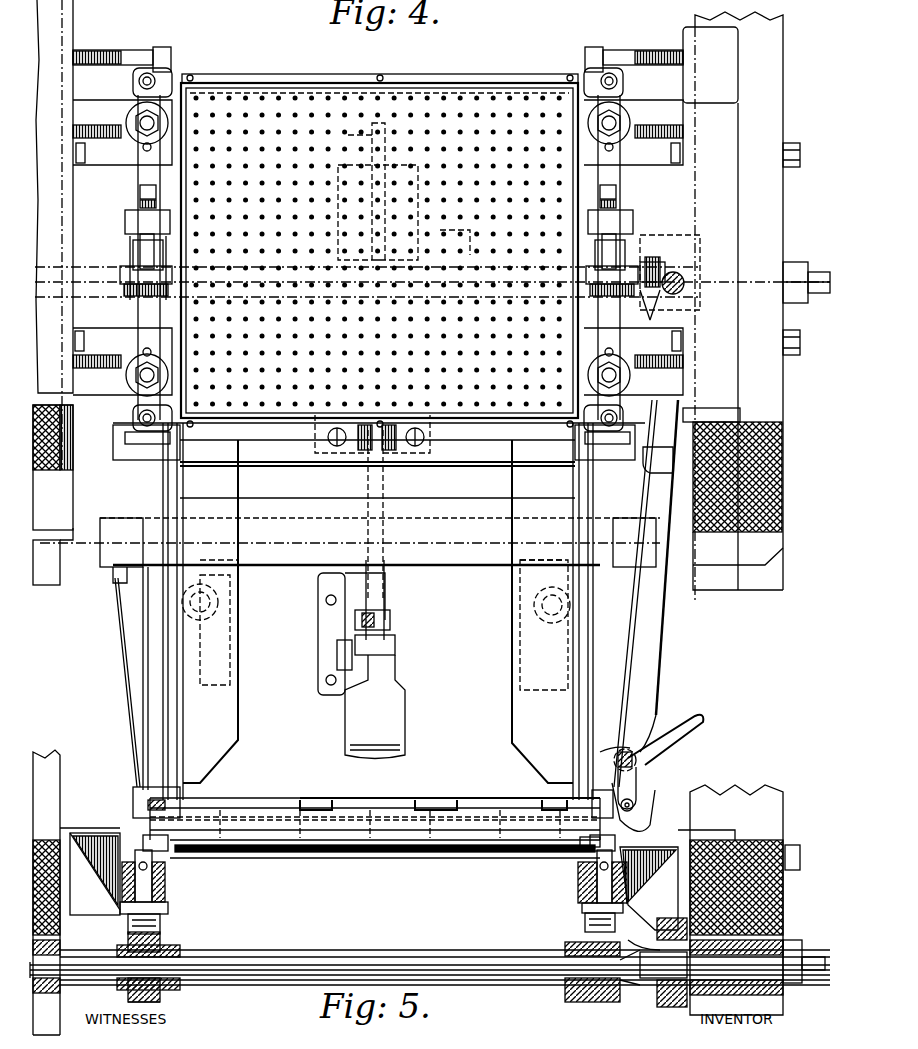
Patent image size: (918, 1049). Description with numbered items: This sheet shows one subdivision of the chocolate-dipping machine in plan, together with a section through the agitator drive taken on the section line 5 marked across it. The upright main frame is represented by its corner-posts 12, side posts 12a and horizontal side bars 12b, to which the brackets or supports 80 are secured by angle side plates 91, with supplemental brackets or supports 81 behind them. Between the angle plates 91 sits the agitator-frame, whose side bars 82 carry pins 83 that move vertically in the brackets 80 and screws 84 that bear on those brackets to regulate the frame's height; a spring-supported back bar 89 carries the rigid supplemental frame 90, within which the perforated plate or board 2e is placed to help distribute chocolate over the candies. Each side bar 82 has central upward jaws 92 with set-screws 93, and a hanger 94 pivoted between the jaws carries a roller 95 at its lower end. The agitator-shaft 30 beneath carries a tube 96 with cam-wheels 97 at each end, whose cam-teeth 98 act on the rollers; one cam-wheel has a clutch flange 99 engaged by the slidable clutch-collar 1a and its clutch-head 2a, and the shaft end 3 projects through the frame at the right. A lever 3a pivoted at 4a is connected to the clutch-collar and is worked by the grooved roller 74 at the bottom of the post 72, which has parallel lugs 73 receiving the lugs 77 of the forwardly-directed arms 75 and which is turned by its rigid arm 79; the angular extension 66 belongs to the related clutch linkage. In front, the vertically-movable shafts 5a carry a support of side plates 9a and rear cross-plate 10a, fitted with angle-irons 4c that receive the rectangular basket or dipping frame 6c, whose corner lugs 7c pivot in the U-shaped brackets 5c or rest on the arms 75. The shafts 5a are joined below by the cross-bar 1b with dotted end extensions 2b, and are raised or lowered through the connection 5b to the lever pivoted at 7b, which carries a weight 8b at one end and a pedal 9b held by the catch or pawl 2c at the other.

In FIG. 4, the slidable clutch-collar 1a is at (672, 245).
In FIG. 5, the slidable clutch-collar 1a is at (652, 925).
In FIG. 4, the cross-bar 1b is at (432, 578).
In FIG. 4, the clutch-head 2a is at (652, 262).
In FIG. 5, the clutch-head 2a is at (661, 983).
In FIG. 4, the forwardly-directed end extensions 2b is at (215, 577).
In FIG. 4, the catch or pawl 2c is at (355, 685).
In FIG. 4, the perforated plate or board 2e is at (285, 145).
In FIG. 5, the perforated plate or board 2e is at (432, 852).
In FIG. 4, the shaft 3 is at (812, 272).
In FIG. 4, the lever 3a is at (660, 600).
In FIG. 5, the lever 3a is at (745, 994).
In FIG. 4, the pivot 4a is at (650, 470).
In FIG. 4, the angle-irons 4c is at (163, 494).
In FIG. 4, the shaft center line 5 is at (432, 282).
In FIG. 4, the vertically-movable shafts 5a is at (205, 604).
In FIG. 4, the pivotal connection 5b is at (390, 617).
In FIG. 4, the U-shaped brackets 5c is at (366, 463).
In FIG. 4, the basket or dipping frames 6c is at (410, 795).
In FIG. 4, the pivot of lever 7b is at (372, 507).
In FIG. 4, the lugs or projections 7c is at (178, 445).
In FIG. 5, the lugs or projections 7c is at (373, 802).
In FIG. 4, the weight 8b is at (378, 191).
In FIG. 4, the side plates 9a is at (358, 615).
In FIG. 4, the pedal 9b is at (405, 720).
In FIG. 4, the rear cross-plate 10a is at (377, 486).
In FIG. 4, the corner-posts 12 is at (770, 470).
In FIG. 5, the corner-posts 12 is at (745, 900).
In FIG. 4, the side posts 12a is at (70, 18).
In FIG. 5, the side posts 12a is at (48, 790).
In FIG. 4, the horizontal side bars 12b is at (770, 388).
In FIG. 5, the horizontal side bars 12b is at (55, 845).
In FIG. 5, the agitator-shaft 30 is at (278, 962).
In FIG. 4, the angular extension 66 is at (380, 560).
In FIG. 4, the post 72 is at (636, 762).
In FIG. 4, the parallel lugs or projections 73 is at (640, 790).
In FIG. 4, the grooved roller 74 is at (632, 747).
In FIG. 4, the forwardly-directed arms 75 is at (135, 678).
In FIG. 4, the lugs or projections 77 is at (633, 812).
In FIG. 4, the arm 79 is at (669, 722).
In FIG. 4, the brackets or supports 80 is at (100, 160).
In FIG. 4, the supplemental brackets or supports 81 is at (148, 60).
In FIG. 4, the side bars 82 is at (137, 188).
In FIG. 5, the side bars 82 is at (165, 882).
In FIG. 4, the pins 83 is at (143, 148).
In FIG. 4, the screws 84 is at (618, 126).
In FIG. 4, the back bar 89 is at (170, 78).
In FIG. 4, the rigid supplemental frame 90 is at (476, 76).
In FIG. 5, the rigid supplemental frame 90 is at (182, 840).
In FIG. 4, the angle-plates or angle side plates 91 is at (690, 222).
In FIG. 4, the jaws 92 is at (135, 222).
In FIG. 4, the set-screw 93 is at (140, 205).
In FIG. 5, the set-screw 93 is at (140, 852).
In FIG. 4, the hangers 94 is at (158, 252).
In FIG. 5, the hangers 94 is at (168, 906).
In FIG. 5, the roller 95 is at (162, 922).
In FIG. 4, the tube 96 is at (502, 250).
In FIG. 5, the tube 96 is at (325, 950).
In FIG. 5, the cam-wheels 97 is at (165, 992).
In FIG. 5, the cam-teeth or projections 98 is at (175, 1005).
In FIG. 4, the clutch collar or flange 99 is at (646, 310).
In FIG. 5, the clutch collar or flange 99 is at (622, 995).